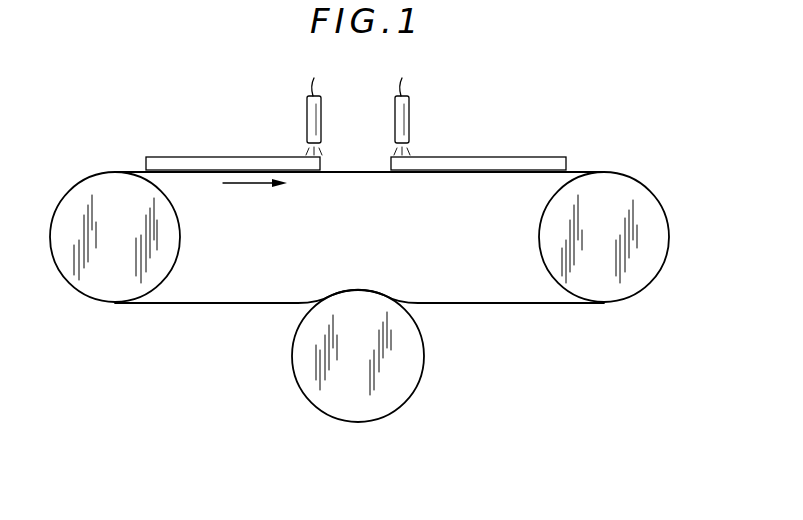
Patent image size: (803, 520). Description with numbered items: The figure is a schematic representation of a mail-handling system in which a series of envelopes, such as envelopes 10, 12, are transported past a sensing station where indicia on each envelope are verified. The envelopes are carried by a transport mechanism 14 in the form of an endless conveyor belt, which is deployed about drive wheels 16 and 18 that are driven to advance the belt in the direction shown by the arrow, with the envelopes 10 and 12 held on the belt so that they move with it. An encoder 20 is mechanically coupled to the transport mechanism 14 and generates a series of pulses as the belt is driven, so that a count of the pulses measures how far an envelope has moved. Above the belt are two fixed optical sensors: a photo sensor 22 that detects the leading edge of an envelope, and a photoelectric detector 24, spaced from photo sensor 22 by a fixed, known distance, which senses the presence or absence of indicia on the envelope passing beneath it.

The envelope 10 is at (533, 157).
The envelope 12 is at (233, 157).
The transport mechanism 14 is at (362, 175).
The drive wheel 16 is at (179, 250).
The drive wheel 18 is at (541, 246).
The encoder 20 is at (424, 358).
The photo sensor 22 is at (321, 115).
The photoelectric detector 24 is at (409, 115).